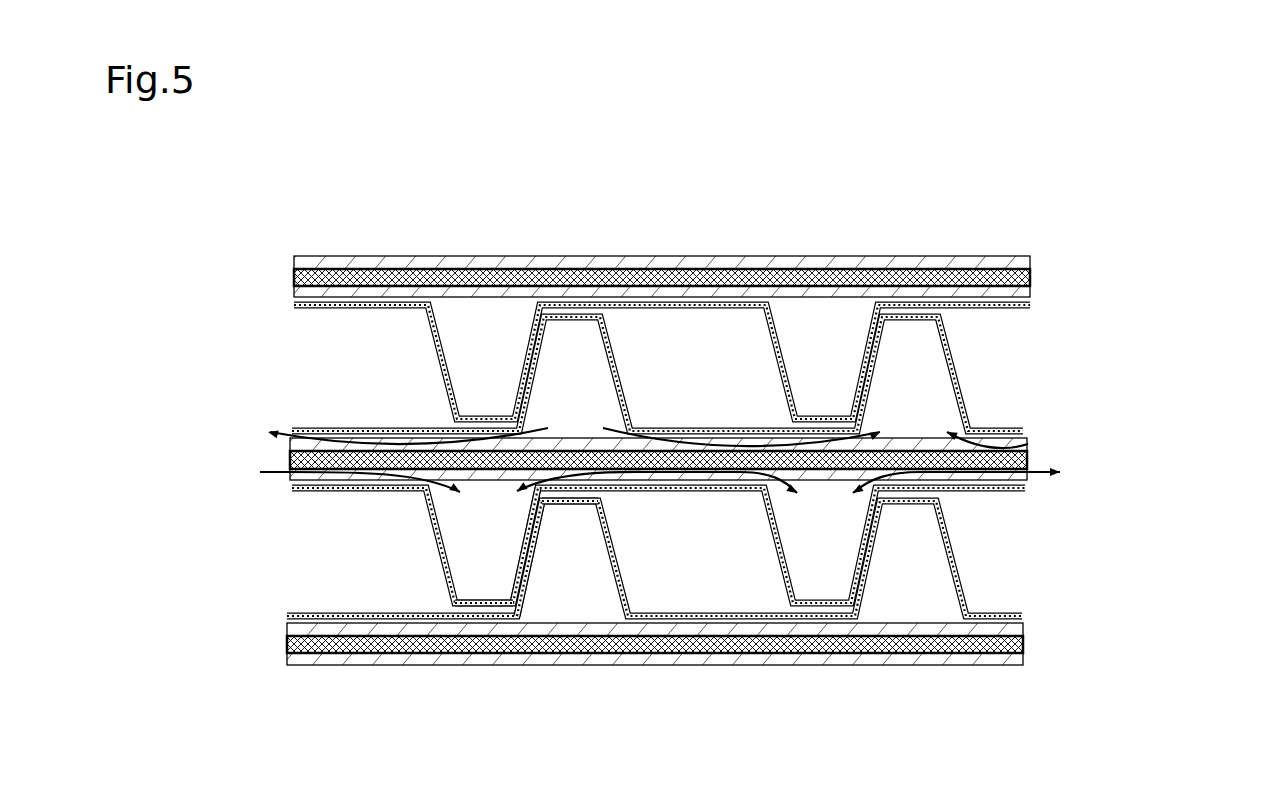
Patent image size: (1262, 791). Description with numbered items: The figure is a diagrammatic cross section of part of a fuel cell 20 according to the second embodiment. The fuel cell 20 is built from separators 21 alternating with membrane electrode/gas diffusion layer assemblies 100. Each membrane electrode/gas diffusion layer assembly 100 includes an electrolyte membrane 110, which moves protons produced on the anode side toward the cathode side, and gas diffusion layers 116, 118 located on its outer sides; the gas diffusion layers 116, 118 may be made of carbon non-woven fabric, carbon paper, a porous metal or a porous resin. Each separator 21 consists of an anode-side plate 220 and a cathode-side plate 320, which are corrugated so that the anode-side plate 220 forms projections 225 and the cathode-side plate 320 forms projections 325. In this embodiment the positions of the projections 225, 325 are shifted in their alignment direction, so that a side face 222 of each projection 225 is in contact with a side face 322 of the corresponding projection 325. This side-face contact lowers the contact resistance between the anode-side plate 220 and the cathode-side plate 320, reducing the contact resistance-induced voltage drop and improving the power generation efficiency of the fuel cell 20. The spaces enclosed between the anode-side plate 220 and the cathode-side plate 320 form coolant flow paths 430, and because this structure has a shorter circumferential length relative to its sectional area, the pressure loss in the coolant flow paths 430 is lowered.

The fuel cell 20 is at (1048, 222).
The membrane electrode/gas diffusion layer assembly 100 is at (759, 446).
The gas diffusion layer 118 is at (1032, 262).
The electrolyte membrane 110 is at (1032, 277).
The gas diffusion layer 116 is at (749, 475).
The separator 21 is at (714, 508).
The anode-side plate 220 is at (687, 508).
The cathode-side plate 320 is at (685, 514).
The side face 222 is at (528, 521).
The side face 322 is at (526, 554).
The projection 225 is at (483, 604).
The projection 325 is at (595, 503).
The coolant flow path 430 is at (392, 409).